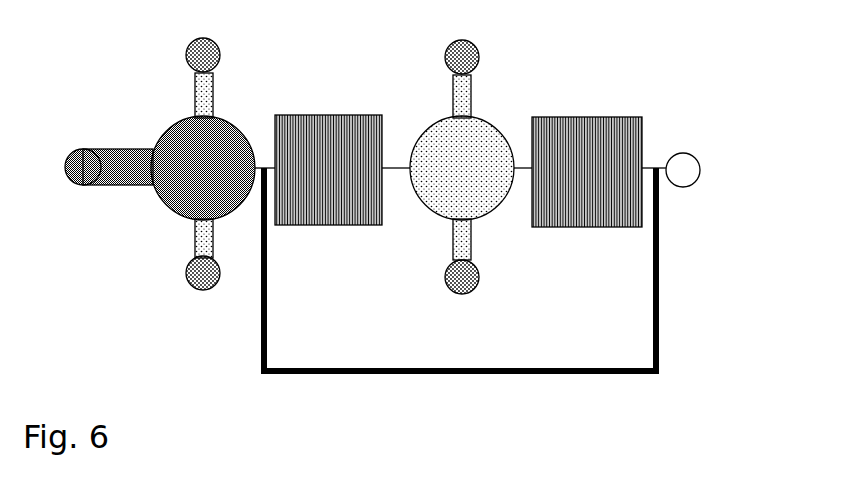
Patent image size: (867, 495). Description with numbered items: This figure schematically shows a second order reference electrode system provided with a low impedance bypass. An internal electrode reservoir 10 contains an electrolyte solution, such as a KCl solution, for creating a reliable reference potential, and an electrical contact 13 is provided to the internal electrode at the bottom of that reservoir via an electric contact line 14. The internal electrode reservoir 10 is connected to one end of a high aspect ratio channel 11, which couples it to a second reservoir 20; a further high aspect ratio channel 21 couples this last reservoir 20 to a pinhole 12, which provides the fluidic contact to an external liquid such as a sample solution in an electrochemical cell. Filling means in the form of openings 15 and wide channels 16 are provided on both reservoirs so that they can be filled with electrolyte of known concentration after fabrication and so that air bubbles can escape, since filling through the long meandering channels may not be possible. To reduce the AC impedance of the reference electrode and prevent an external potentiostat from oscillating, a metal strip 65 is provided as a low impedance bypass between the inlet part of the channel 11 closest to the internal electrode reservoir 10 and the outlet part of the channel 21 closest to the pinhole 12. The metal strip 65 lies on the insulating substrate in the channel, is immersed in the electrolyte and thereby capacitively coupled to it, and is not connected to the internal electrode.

The internal electrode reservoir 10 is at (203, 168).
The high aspect ratio channel 11 is at (325, 109).
The pinhole 12 is at (691, 164).
The electrical contact 13 is at (85, 157).
The electric contact line 14 is at (128, 162).
The openings 15 is at (192, 53).
The wide channels 16 is at (195, 95).
The reservoir 20 is at (462, 168).
The high aspect ratio channel 21 is at (591, 110).
The metal strip 65 is at (571, 367).